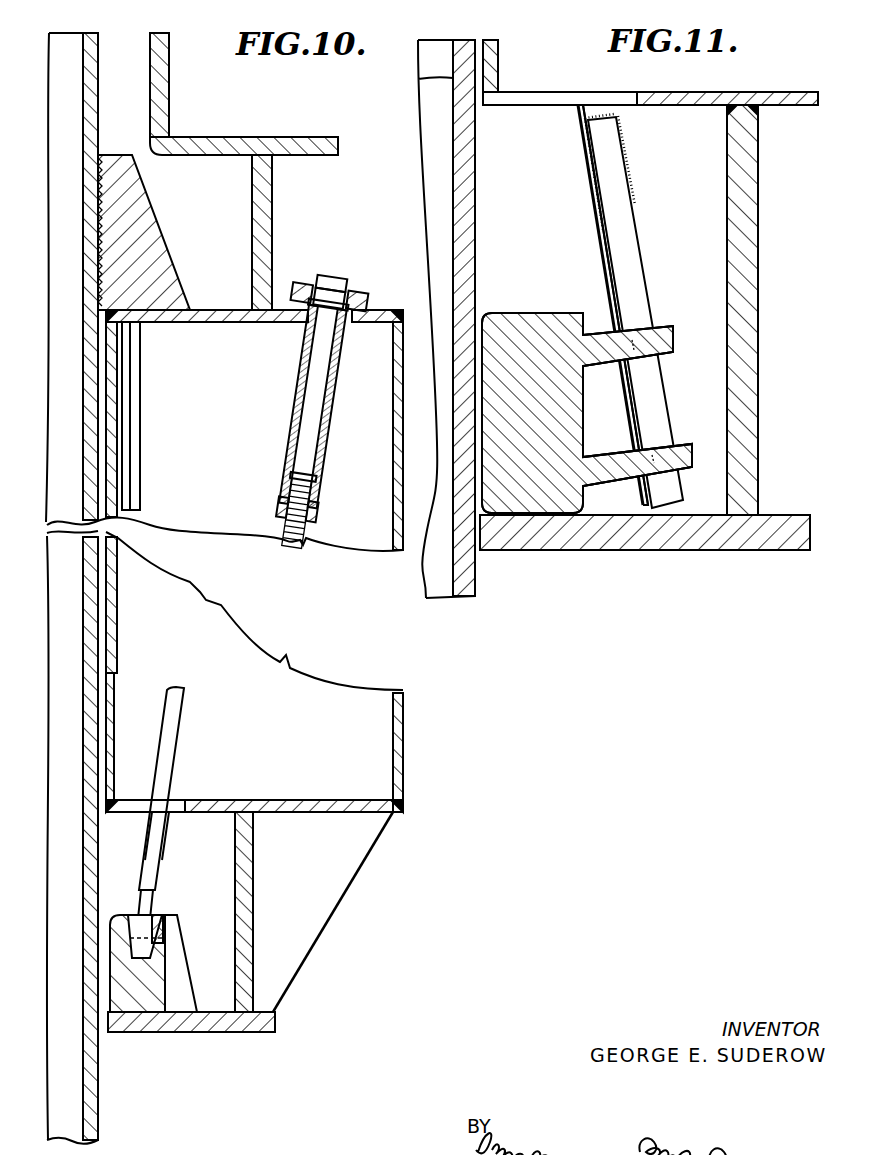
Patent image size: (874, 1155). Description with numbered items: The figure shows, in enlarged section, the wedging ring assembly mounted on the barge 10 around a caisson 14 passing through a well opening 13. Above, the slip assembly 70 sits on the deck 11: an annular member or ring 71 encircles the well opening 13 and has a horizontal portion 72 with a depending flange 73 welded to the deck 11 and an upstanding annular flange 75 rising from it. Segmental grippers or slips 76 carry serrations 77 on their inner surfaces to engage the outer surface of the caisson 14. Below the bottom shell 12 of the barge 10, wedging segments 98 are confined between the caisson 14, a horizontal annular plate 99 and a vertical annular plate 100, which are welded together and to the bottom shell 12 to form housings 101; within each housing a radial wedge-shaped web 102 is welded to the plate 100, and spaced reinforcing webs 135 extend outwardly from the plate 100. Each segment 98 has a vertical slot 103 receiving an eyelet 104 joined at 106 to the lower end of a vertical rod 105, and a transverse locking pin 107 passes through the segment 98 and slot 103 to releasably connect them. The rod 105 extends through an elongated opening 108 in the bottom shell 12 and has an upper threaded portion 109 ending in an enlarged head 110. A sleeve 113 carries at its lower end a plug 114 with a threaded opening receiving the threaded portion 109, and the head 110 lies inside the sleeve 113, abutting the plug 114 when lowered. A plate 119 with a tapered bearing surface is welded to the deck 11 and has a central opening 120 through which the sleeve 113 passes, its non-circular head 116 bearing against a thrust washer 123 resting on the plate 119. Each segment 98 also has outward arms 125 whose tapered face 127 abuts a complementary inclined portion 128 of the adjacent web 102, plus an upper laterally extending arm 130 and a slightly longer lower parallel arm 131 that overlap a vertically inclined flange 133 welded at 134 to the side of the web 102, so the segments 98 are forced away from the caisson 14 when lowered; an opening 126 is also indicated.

In FIG. 10, the barge 10 is at (254, 533).
In FIG. 10, the deck 11 is at (204, 308).
In FIG. 10, the bottom shell 12 is at (254, 785).
In FIG. 11, the bottom shell 12 is at (516, 92).
In FIG. 10, the well opening 13 is at (100, 351).
In FIG. 11, the well opening 13 is at (481, 74).
In FIG. 10, the caisson 14 is at (98, 80).
In FIG. 11, the caisson 14 is at (475, 224).
In FIG. 10, the slip assembly 70 is at (207, 112).
In FIG. 10, the annular member or ring 71 is at (346, 143).
In FIG. 10, the horizontal portion 72 is at (262, 137).
In FIG. 10, the depending flange 73 is at (272, 240).
In FIG. 10, the upstanding annular flange 75 is at (167, 90).
In FIG. 10, the segmental gripper or slip 76 is at (127, 232).
In FIG. 10, the serrations 77 is at (96, 266).
In FIG. 10, the wedging segment 98 is at (164, 987).
In FIG. 11, the wedging segment 98 is at (605, 408).
In FIG. 10, the horizontal annular plate 99 is at (222, 1030).
In FIG. 11, the horizontal annular plate 99 is at (575, 540).
In FIG. 10, the vertical annular plate 100 is at (254, 932).
In FIG. 11, the vertical annular plate 100 is at (758, 297).
In FIG. 10, the housing 101 is at (115, 900).
In FIG. 11, the housing 101 is at (538, 196).
In FIG. 10, the radial web or plate 102 is at (218, 882).
In FIG. 11, the radial web or plate 102 is at (715, 192).
In FIG. 10, the vertical slot 103 is at (136, 917).
In FIG. 10, the eyelet 104 is at (141, 852).
In FIG. 10, the vertical rod 105 is at (173, 714).
In FIG. 10, the connection 106 is at (153, 902).
In FIG. 10, the transverse locking pin 107 is at (166, 942).
In FIG. 10, the elongated opening 108 is at (139, 803).
In FIG. 10, the upper threaded portion 109 is at (341, 520).
In FIG. 10, the flanged or enlarged head 110 is at (347, 471).
In FIG. 10, the sleeve or tubular member 113 is at (342, 408).
In FIG. 10, the plug 114 is at (273, 490).
In FIG. 10, the non-circular head 116 is at (354, 271).
In FIG. 10, the plate 119 is at (288, 281).
In FIG. 10, the central opening 120 is at (329, 279).
In FIG. 10, the thrust washer 123 is at (381, 294).
In FIG. 10, the arm or projection 125 is at (178, 997).
In FIG. 11, the arm or projection 125 is at (597, 318).
In FIG. 11, the opening 126 is at (543, 125).
In FIG. 10, the tapered or inclined face 127 is at (190, 990).
In FIG. 11, the tapered or inclined face 127 is at (643, 393).
In FIG. 10, the inclined portion 128 is at (167, 853).
In FIG. 11, the inclined portion 128 is at (582, 143).
In FIG. 11, the upper laterally extending arm 130 is at (668, 328).
In FIG. 11, the lower parallel arm 131 is at (672, 448).
In FIG. 11, the vertically inclined flange 133 is at (622, 218).
In FIG. 11, the weld 134 is at (628, 150).
In FIG. 10, the reinforcing web 135 is at (342, 898).